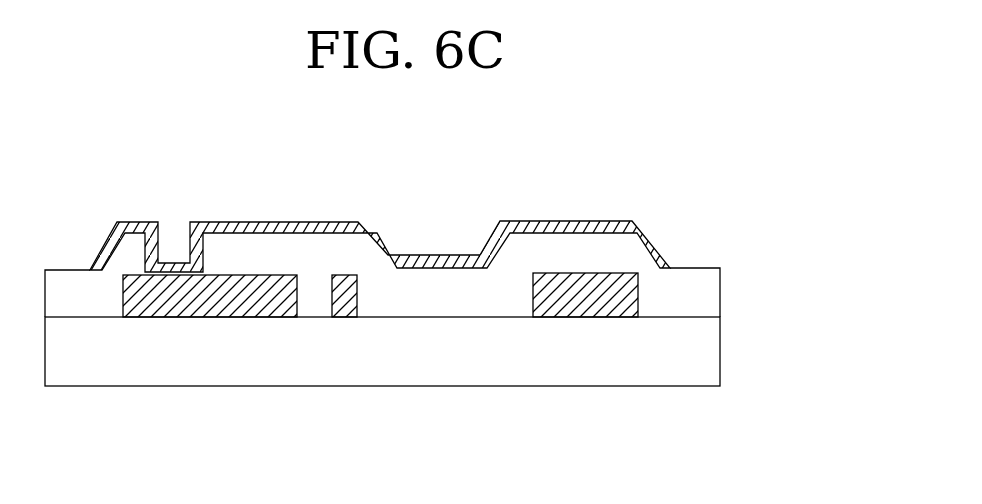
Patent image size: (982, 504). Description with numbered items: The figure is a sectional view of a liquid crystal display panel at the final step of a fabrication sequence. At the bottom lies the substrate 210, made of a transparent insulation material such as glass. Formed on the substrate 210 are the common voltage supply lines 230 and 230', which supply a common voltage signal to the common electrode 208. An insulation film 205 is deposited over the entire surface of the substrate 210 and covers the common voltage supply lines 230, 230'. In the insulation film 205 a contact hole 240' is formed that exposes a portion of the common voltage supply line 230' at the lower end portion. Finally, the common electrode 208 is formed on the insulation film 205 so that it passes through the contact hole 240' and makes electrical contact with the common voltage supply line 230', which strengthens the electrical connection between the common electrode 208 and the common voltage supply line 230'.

The common electrode 208 is at (302, 227).
The insulation film 205 is at (707, 292).
The substrate 210 is at (707, 353).
The common voltage supply line 230 is at (585, 367).
The common voltage supply line 230' is at (247, 368).
The contact hole 240' is at (173, 204).